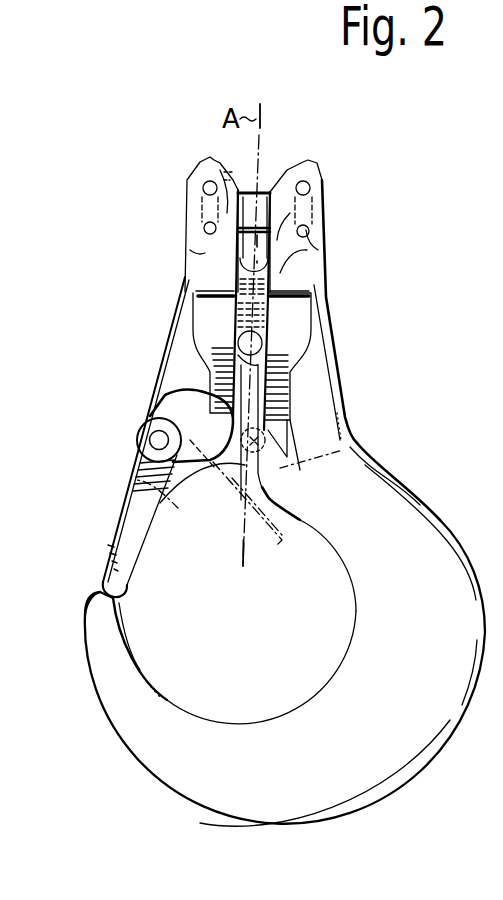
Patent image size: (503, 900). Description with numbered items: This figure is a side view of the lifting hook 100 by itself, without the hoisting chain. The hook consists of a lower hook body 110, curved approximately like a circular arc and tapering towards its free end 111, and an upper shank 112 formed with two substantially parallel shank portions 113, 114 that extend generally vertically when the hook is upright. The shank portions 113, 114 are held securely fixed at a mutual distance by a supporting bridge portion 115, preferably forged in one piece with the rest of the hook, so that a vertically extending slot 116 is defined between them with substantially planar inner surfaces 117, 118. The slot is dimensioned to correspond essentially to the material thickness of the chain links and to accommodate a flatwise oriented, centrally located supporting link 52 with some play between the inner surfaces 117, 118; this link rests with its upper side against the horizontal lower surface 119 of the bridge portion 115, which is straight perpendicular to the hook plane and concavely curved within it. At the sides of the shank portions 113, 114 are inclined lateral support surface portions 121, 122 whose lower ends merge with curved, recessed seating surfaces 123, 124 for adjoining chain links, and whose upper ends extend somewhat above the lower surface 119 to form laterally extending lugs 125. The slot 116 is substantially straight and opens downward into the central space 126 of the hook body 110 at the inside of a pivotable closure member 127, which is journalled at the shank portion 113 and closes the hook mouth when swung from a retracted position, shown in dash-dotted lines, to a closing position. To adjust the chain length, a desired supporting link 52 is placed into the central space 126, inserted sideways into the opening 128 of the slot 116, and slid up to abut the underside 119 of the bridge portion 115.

The lifting hook 100 is at (138, 197).
The hook body 110 is at (358, 772).
The free end 111 is at (97, 620).
The upper shank 112 is at (110, 268).
The shank portion 113 is at (188, 248).
The shank portion 114 is at (317, 234).
The supporting bridge portion 115 is at (310, 257).
The slot 116 is at (238, 185).
The inner surface 117 is at (210, 398).
The inner surface 118 is at (265, 422).
The lower surface 119 is at (280, 349).
The inclined lateral support surface portion 121 is at (210, 323).
The inclined lateral support surface portion 122 is at (285, 325).
The recessed seating surface 123 is at (207, 378).
The recessed seating surface 124 is at (262, 390).
The lugs 125 is at (196, 294).
The central space 126 is at (260, 638).
The pivotable closure member 127 is at (130, 520).
The opening of the slot 128 is at (130, 478).
The supporting link 52 is at (360, 448).